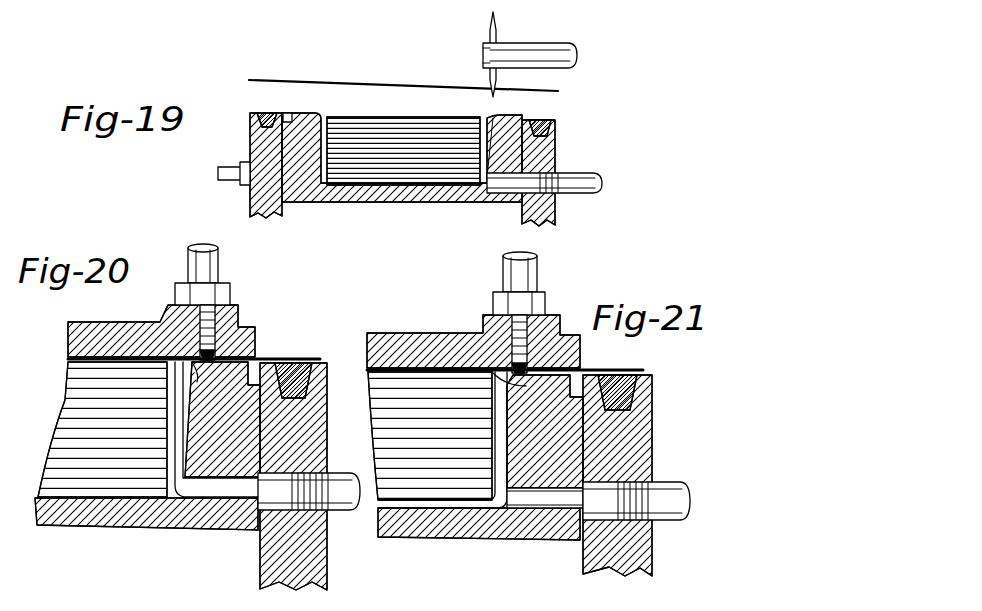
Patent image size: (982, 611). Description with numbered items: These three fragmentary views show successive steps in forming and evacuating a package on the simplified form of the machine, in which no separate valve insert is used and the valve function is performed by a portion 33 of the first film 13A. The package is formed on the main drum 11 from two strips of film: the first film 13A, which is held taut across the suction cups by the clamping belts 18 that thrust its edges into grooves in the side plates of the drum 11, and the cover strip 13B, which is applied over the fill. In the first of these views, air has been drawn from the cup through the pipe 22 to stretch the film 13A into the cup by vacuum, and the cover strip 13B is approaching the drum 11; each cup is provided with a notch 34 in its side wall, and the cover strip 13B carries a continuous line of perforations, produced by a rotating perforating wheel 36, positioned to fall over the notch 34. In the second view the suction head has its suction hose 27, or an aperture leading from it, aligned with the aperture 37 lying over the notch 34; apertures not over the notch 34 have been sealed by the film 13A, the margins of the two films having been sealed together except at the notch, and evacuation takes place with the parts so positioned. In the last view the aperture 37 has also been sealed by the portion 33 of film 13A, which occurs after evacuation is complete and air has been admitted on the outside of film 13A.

In FIG. 19, the main drum 11 is at (266, 165).
In FIG. 20, the main drum 11 is at (330, 576).
In FIG. 21, the main drum 11 is at (654, 554).
In FIG. 20, the first film strip 13A is at (173, 494).
In FIG. 21, the first film strip 13A is at (468, 504).
In FIG. 19, the cover strip 13B is at (272, 80).
In FIG. 19, the clamping belts 18 is at (267, 126).
In FIG. 20, the clamping belts 18 is at (303, 364).
In FIG. 21, the clamping belts 18 is at (641, 366).
In FIG. 19, the pipe 22 is at (603, 184).
In FIG. 20, the pipe 22 is at (333, 513).
In FIG. 21, the pipe 22 is at (667, 483).
In FIG. 20, the suction hose 27 is at (220, 263).
In FIG. 21, the suction hose 27 is at (538, 265).
In FIG. 20, the portion of first film 33 is at (197, 380).
In FIG. 21, the portion of first film 33 is at (507, 390).
In FIG. 21, the notch 34 is at (524, 383).
In FIG. 19, the perforating wheel 36 is at (497, 34).
In FIG. 20, the aperture 37 is at (214, 353).
In FIG. 21, the aperture 37 is at (516, 364).